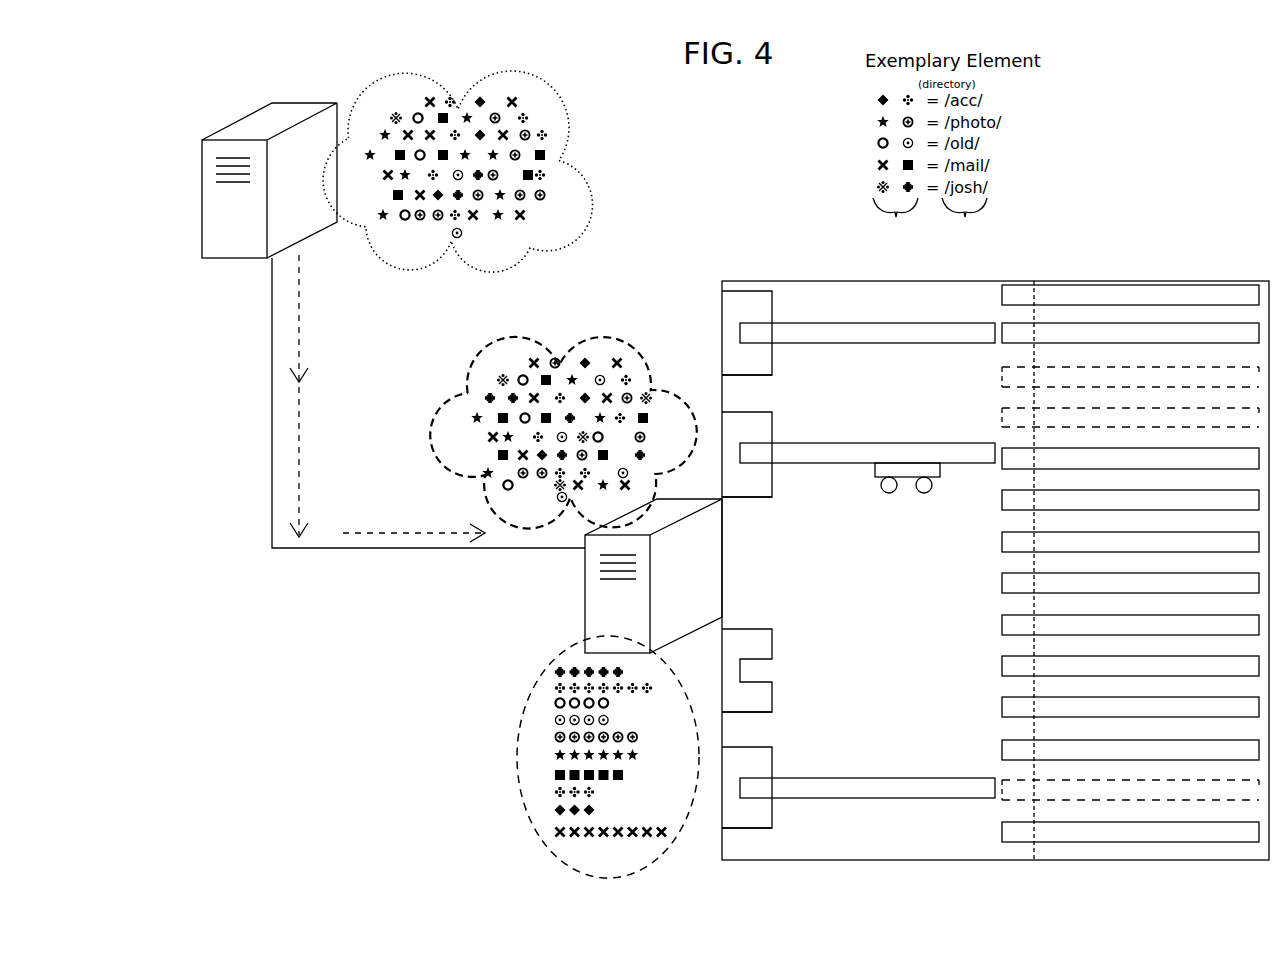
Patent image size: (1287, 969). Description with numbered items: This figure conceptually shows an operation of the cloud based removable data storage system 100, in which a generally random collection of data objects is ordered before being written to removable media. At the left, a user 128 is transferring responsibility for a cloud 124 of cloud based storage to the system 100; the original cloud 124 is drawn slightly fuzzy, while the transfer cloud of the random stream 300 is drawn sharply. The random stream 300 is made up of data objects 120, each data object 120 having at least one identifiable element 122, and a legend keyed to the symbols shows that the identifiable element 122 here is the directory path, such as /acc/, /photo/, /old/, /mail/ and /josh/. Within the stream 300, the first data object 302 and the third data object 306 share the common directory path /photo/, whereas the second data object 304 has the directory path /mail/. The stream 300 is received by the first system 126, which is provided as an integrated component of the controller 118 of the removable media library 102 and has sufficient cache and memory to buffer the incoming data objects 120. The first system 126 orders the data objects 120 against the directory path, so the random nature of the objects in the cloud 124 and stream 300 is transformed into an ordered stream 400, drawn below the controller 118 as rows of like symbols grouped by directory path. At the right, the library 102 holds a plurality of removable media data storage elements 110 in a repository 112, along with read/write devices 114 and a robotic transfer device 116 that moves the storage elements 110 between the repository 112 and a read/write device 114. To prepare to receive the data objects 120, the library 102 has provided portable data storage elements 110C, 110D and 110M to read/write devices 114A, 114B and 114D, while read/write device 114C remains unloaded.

The cloud based removable data storage system 100 is at (1090, 168).
The removable media library 102 is at (1106, 271).
The removable media data storage elements 110 is at (1172, 293).
The portable data storage element 110C is at (868, 333).
The portable data storage element 110D is at (946, 459).
The portable data storage element 110M is at (900, 780).
The repository 112 is at (1140, 402).
The data read/write device 114 is at (755, 292).
The read/write device 114A is at (766, 370).
The read/write device 114B is at (767, 490).
The read/write device 114C is at (765, 700).
The read/write device 114D is at (765, 815).
The robotic transfer device 116 is at (927, 491).
The controller 118 is at (653, 576).
The first system 126 is at (716, 596).
The data object 120 is at (521, 100).
The identifiable element 122 is at (945, 170).
The cloud 124 is at (586, 128).
The user 128 is at (250, 243).
The random stream 300 is at (570, 415).
The first data object 302 is at (557, 353).
The second data object 304 is at (617, 358).
The third data object 306 is at (487, 477).
The ordered stream 400 is at (530, 702).